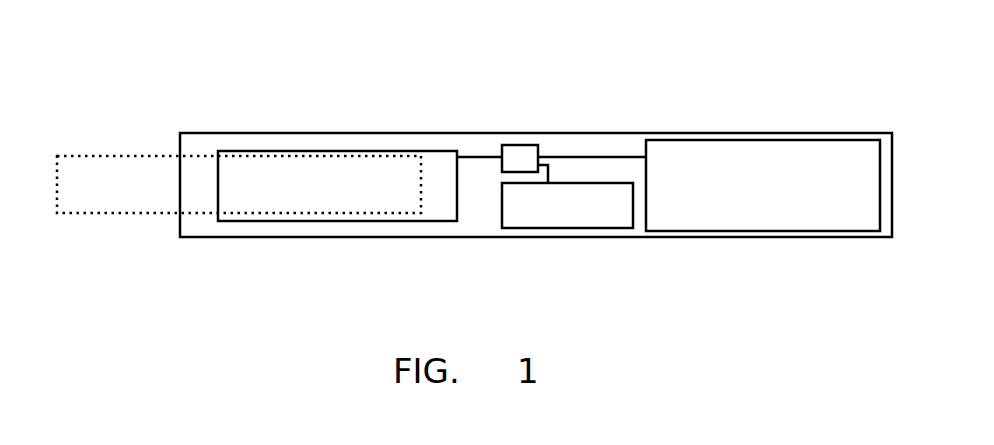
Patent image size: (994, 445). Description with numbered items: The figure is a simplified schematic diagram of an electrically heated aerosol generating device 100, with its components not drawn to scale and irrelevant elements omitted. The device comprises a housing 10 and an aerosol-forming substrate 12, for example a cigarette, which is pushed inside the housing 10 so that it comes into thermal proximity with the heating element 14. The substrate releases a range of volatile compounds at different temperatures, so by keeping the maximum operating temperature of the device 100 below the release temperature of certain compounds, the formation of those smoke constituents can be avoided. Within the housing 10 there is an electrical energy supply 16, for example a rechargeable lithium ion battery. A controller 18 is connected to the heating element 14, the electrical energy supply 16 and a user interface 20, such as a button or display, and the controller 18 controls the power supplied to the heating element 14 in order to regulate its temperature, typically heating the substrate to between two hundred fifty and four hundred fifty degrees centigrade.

The electrically heated aerosol generating device 100 is at (166, 95).
The housing 10 is at (240, 131).
The aerosol-forming substrate 12 is at (108, 193).
The heating element 14 is at (440, 162).
The electrical energy supply 16 is at (780, 168).
The controller 18 is at (518, 157).
The user interface 20 is at (578, 205).